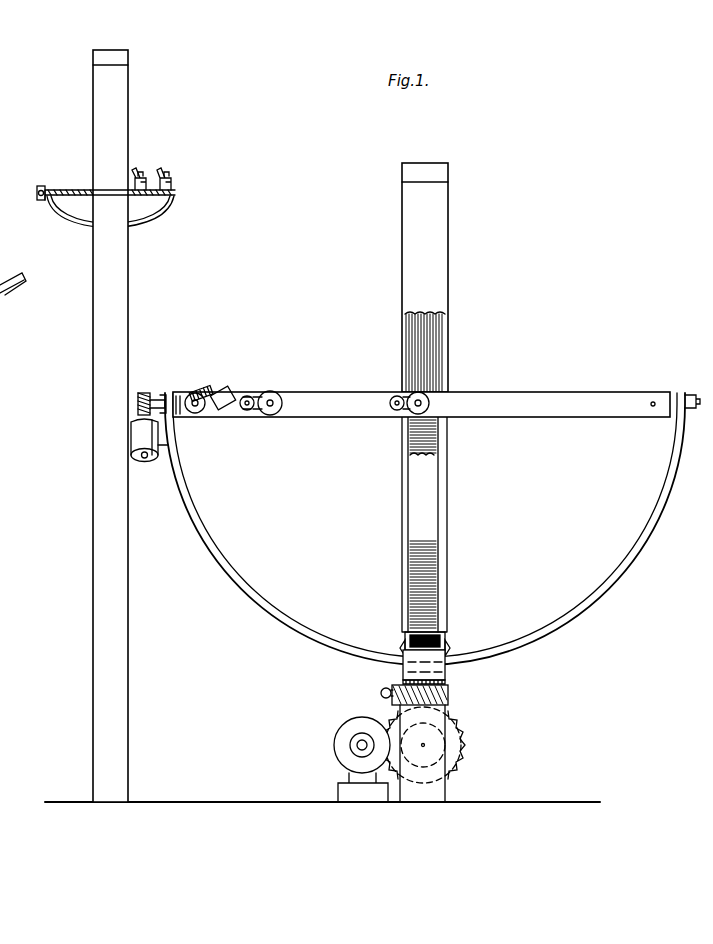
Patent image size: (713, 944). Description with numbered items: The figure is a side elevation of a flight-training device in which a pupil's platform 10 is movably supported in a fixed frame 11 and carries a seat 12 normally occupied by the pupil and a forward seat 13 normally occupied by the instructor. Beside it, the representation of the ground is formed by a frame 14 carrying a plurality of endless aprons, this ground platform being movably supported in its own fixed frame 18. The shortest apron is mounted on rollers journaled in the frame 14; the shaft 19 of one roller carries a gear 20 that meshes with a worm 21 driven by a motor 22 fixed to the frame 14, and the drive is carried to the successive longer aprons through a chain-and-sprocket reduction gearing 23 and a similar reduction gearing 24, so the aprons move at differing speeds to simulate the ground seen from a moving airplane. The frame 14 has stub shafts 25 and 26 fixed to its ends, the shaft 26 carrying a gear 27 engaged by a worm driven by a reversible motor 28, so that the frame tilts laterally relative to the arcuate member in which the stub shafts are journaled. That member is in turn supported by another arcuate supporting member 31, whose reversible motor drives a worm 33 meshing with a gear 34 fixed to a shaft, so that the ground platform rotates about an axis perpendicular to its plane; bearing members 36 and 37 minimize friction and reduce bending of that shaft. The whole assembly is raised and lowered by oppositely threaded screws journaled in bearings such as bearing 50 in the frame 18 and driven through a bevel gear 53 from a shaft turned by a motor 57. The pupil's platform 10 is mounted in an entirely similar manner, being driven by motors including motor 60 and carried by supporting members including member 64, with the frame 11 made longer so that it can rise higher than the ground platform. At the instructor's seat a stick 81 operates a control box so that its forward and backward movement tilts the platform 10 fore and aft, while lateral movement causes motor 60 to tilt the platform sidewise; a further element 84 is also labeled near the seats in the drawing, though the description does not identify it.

The pupil's platform 10 is at (66, 188).
The fixed frame 11 is at (95, 295).
The seat 12 is at (141, 172).
The seat 13 is at (169, 176).
The frame 14 is at (576, 396).
The fixed frame 18 is at (440, 266).
The shaft 19 is at (196, 413).
The gear 20 is at (182, 418).
The worm 21 is at (199, 388).
The motor 22 is at (225, 406).
The reduction gearing 23 is at (266, 391).
The reduction gearing 24 is at (397, 410).
The stub shaft 25 is at (692, 395).
The stub shaft 26 is at (162, 395).
The gear 27 is at (143, 392).
The motor 28 is at (151, 462).
The arcuate supporting member 31 is at (430, 513).
The worm 33 is at (381, 693).
The gear 34 is at (448, 692).
The bearing member 36 is at (446, 646).
The bearing member 37 is at (403, 660).
The bearing 50 is at (212, 572).
The bevel gear 53 is at (462, 750).
The motor 57 is at (334, 746).
The motor 60 is at (38, 193).
The supporting member 64 is at (170, 215).
The stick 81 is at (172, 178).
The clamp screw 84 is at (148, 178).